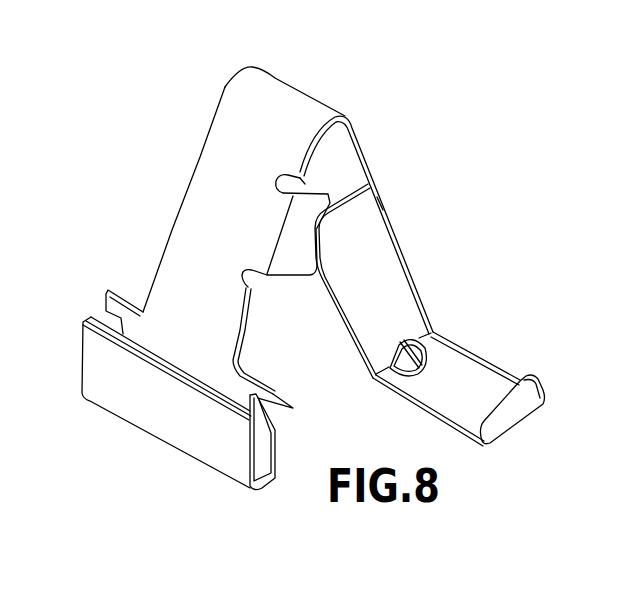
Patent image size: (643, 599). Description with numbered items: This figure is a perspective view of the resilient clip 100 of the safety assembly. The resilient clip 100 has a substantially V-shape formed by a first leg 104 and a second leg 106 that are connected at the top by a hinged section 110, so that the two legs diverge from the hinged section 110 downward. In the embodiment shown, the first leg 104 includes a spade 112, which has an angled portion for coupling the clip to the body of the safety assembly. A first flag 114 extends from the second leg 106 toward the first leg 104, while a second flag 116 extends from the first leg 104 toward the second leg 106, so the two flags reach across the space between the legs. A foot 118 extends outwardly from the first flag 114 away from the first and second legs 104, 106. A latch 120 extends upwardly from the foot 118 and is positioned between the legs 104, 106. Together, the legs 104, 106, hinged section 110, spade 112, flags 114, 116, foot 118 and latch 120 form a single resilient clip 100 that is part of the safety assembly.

The resilient clip 100 is at (510, 246).
The first leg 104 is at (201, 152).
The second leg 106 is at (367, 158).
The hinged section 110 is at (284, 83).
The spade 112 is at (115, 402).
The first flag 114 is at (384, 250).
The second flag 116 is at (288, 268).
The foot 118 is at (465, 373).
The latch 120 is at (512, 412).